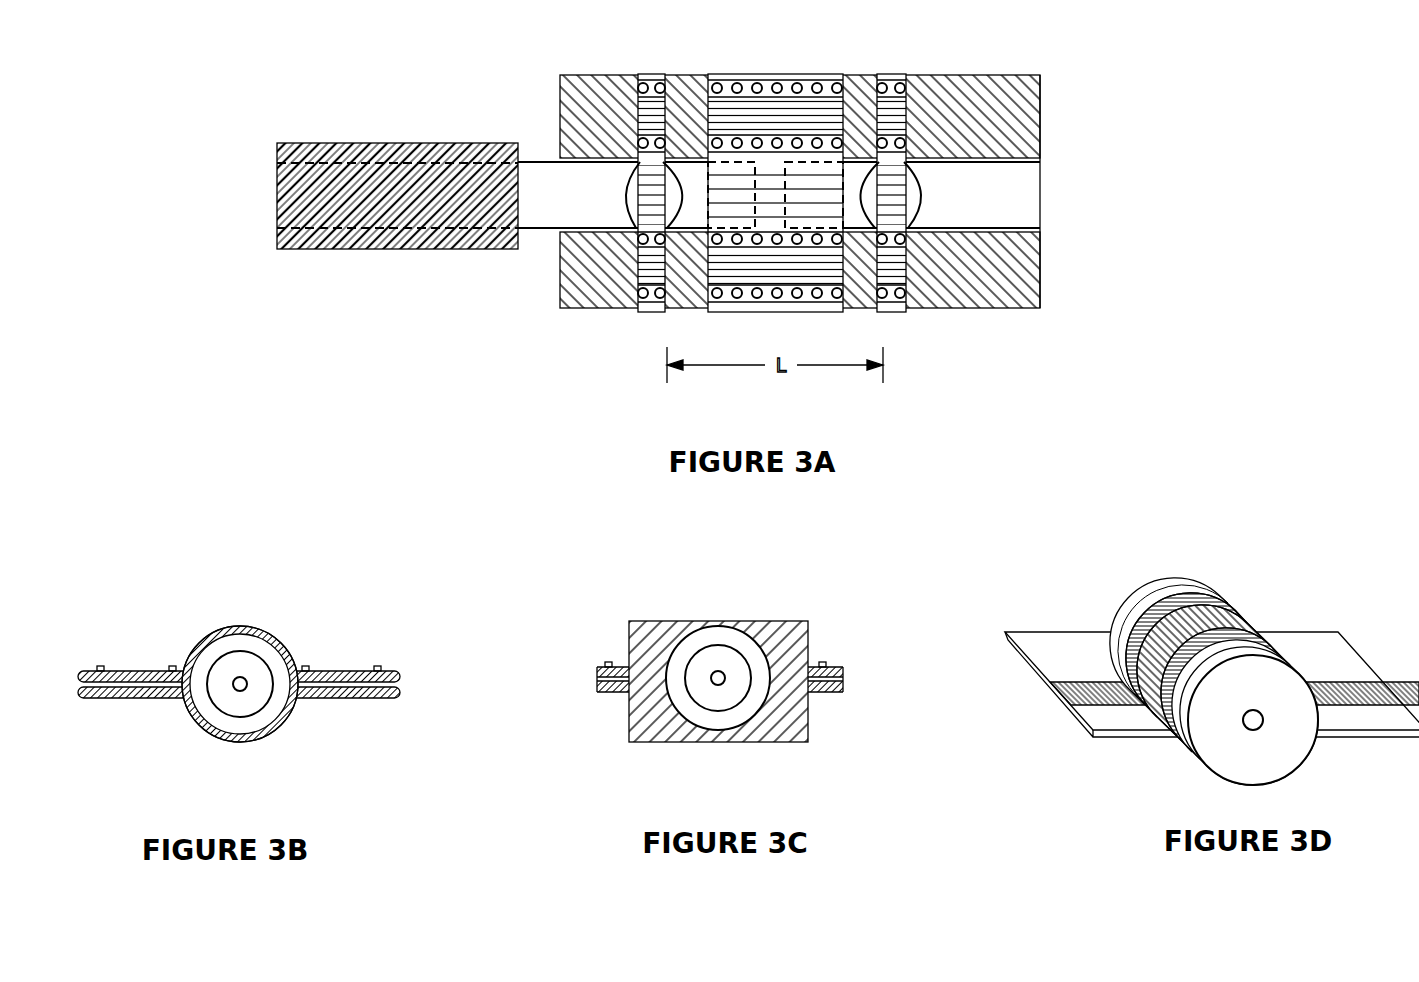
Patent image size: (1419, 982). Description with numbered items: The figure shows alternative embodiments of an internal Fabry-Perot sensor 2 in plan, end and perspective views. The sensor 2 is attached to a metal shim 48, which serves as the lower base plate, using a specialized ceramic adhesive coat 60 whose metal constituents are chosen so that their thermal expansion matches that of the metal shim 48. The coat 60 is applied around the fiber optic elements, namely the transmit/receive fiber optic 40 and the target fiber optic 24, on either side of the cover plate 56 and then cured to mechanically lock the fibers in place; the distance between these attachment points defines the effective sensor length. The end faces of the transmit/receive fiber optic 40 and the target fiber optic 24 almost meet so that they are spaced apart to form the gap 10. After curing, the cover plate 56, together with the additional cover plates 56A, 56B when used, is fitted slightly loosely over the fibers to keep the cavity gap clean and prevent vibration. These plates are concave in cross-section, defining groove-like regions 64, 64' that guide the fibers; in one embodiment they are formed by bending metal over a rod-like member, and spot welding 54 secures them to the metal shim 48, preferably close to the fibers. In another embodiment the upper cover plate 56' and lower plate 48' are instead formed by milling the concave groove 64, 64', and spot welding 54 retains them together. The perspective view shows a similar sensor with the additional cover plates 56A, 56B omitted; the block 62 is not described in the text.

In FIG. 3A, the sensor 2 is at (853, 25).
In FIG. 3D, the sensor 2 is at (1123, 550).
In FIG. 3A, the gap 10 is at (765, 191).
In FIG. 3A, the target fiber optic 24 is at (1018, 181).
In FIG. 3D, the target fiber optic 24 is at (1293, 745).
In FIG. 3A, the transmit/receive fiber optic 40 is at (542, 228).
In FIG. 3B, the transmit/receive fiber optic 40 is at (222, 648).
In FIG. 3C, the transmit/receive fiber optic 40 is at (697, 645).
In FIG. 3D, the transmit/receive fiber optic 40 is at (1170, 578).
In FIG. 3A, the metal shim 48 is at (824, 168).
In FIG. 3B, the metal shim 48 is at (242, 705).
In FIG. 3D, the metal shim 48 is at (1212, 663).
In FIG. 3C, the lower plate 48' is at (744, 682).
In FIG. 3A, the spot welding 54 is at (836, 86).
In FIG. 3B, the spot welding 54 is at (170, 665).
In FIG. 3C, the spot welding 54 is at (608, 662).
In FIG. 3D, the spot welding 54 is at (1153, 691).
In FIG. 3A, the cover plate 56 is at (775, 174).
In FIG. 3B, the cover plate 56 is at (261, 666).
In FIG. 3D, the cover plate 56 is at (1233, 659).
In FIG. 3A, the cover plate 56A is at (652, 74).
In FIG. 3A, the cover plate 56B is at (892, 74).
In FIG. 3C, the upper cover plate 56' is at (745, 658).
In FIG. 3A, the ceramic adhesive coat 60 is at (636, 228).
In FIG. 3D, the ceramic adhesive coat 60 is at (1222, 610).
In FIG. 3A, the end block 62 is at (352, 143).
In FIG. 3B, the groove-like region 64 is at (315, 658).
In FIG. 3C, the groove-like region 64 is at (809, 643).
In FIG. 3B, the groove-like region 64' is at (171, 730).
In FIG. 3C, the groove-like region 64' is at (640, 740).